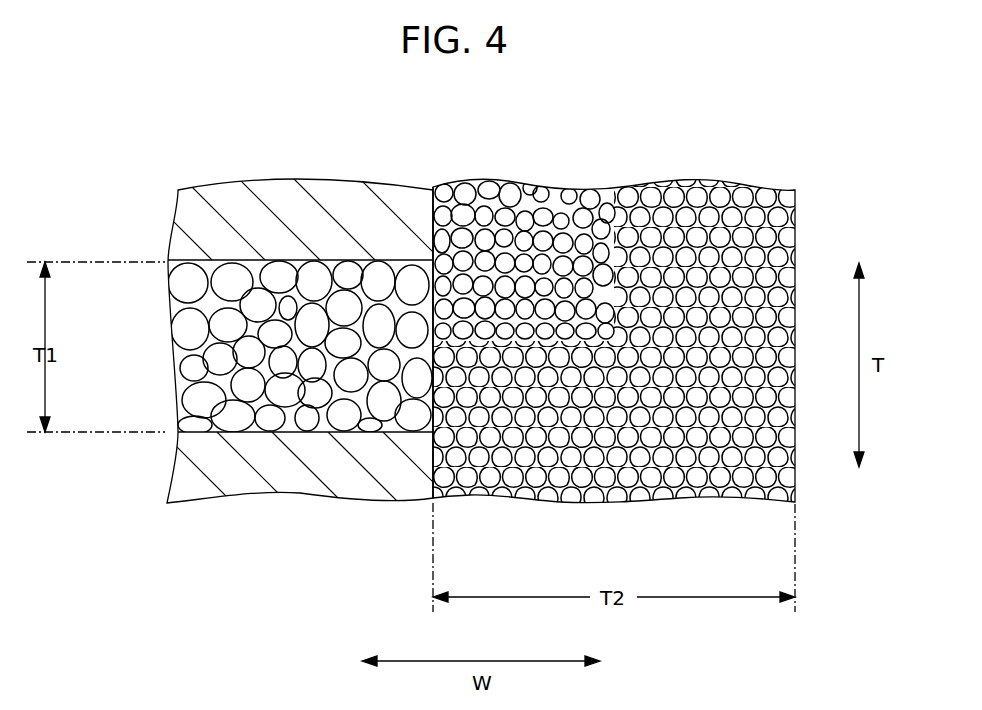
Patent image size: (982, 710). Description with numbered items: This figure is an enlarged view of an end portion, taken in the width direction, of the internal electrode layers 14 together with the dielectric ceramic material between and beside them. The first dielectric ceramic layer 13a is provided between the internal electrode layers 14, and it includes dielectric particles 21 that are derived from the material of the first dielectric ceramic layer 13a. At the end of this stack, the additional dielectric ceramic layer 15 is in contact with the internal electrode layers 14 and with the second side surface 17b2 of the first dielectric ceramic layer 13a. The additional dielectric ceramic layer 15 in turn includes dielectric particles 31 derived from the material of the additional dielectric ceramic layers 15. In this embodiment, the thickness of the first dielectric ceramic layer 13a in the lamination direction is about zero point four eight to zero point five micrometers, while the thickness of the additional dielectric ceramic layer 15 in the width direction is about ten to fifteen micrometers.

The internal electrode layers 14 is at (256, 215).
The first dielectric ceramic layer 13a is at (345, 260).
The dielectric particles 21 is at (222, 362).
The dielectric particles 31 is at (588, 258).
The additional dielectric ceramic layer 15 is at (665, 300).
The second side surface 17b2 is at (440, 377).